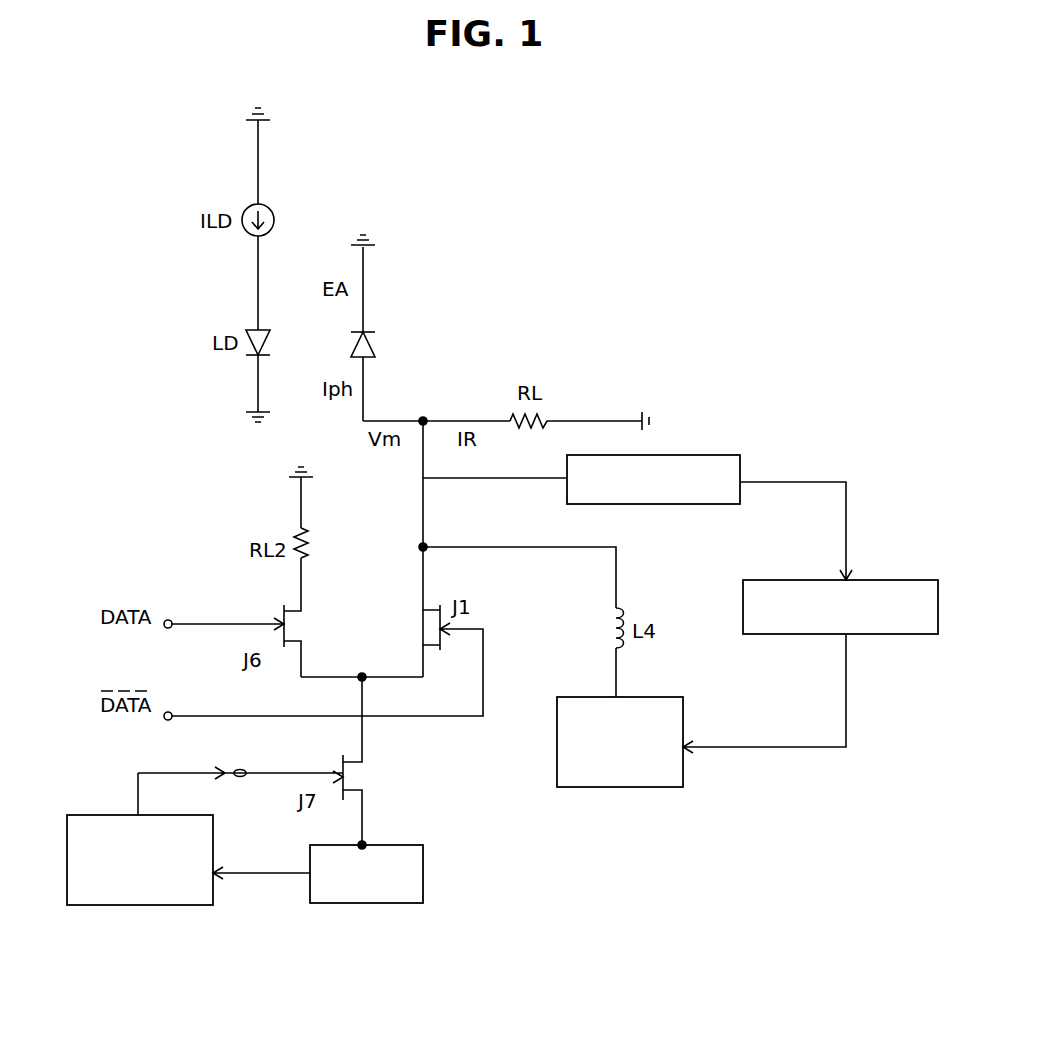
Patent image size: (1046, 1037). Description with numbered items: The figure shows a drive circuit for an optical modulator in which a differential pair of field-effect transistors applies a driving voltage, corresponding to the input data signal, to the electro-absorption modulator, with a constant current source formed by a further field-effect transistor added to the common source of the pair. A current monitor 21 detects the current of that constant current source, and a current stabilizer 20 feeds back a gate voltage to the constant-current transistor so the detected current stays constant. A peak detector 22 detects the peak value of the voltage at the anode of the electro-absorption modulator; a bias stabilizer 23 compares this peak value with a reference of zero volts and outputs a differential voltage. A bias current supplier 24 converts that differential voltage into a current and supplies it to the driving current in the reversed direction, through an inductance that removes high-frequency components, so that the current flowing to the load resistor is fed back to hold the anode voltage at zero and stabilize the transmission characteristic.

The current stabilizer 20 is at (182, 905).
The current monitor 21 is at (423, 893).
The peak detector 22 is at (716, 455).
The bias stabilizer 23 is at (890, 580).
The bias current supplier 24 is at (683, 765).